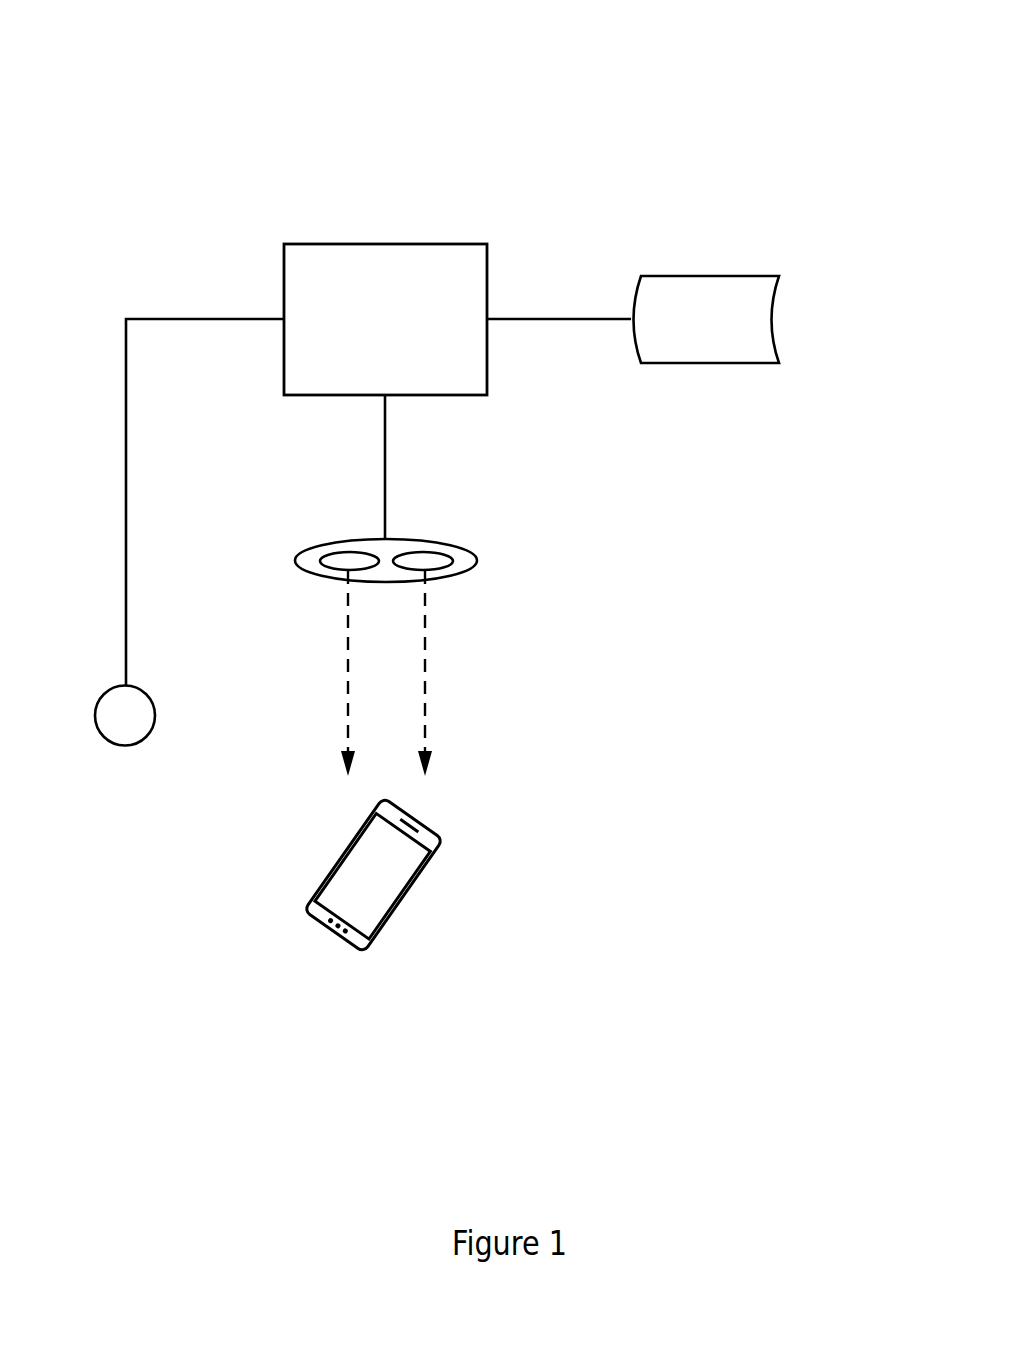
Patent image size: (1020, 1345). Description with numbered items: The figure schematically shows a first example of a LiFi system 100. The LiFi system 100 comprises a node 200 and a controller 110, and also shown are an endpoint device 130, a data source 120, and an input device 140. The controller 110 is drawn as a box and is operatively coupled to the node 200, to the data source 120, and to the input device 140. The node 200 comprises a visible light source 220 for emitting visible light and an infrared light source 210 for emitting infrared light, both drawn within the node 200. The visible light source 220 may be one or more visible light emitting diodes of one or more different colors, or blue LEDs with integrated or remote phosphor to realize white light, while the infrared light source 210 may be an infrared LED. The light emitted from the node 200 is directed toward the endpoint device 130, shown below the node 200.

The LiFi system 100 is at (500, 134).
The controller 110 is at (299, 396).
The data source 120 is at (710, 364).
The endpoint device 130 is at (338, 862).
The input device 140 is at (132, 745).
The node 200 is at (325, 578).
The infrared light source 210 is at (345, 552).
The visible light source 220 is at (433, 552).